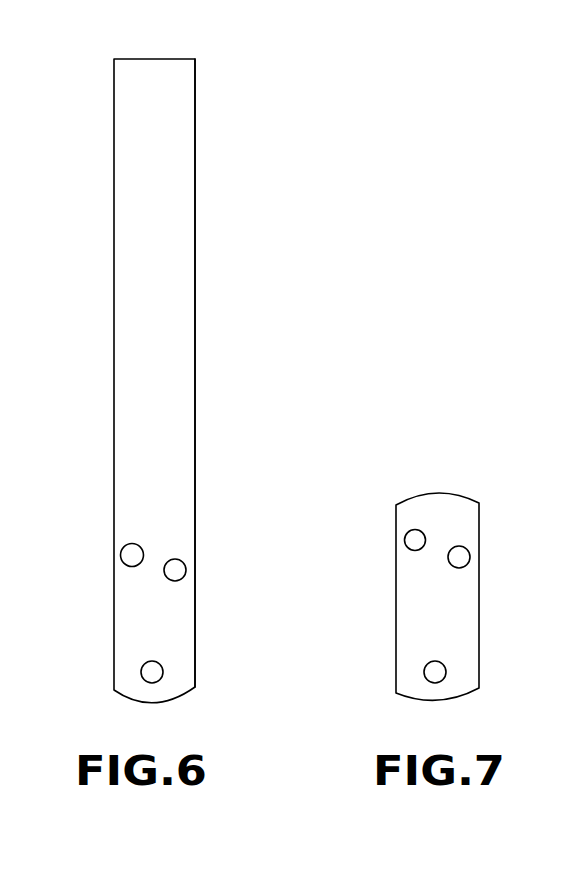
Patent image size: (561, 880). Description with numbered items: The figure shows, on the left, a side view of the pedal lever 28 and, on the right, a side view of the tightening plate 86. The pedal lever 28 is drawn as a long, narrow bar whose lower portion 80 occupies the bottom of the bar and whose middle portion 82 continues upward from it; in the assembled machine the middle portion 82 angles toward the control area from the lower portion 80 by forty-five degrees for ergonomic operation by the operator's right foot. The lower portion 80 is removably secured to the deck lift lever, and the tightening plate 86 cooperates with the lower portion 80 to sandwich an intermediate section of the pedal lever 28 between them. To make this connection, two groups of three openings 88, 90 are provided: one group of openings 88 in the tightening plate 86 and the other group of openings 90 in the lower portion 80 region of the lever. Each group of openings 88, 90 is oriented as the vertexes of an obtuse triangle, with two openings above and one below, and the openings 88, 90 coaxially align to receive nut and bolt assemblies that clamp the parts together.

In FIG. 6, the pedal lever 28 is at (238, 250).
In FIG. 6, the lower portion 80 is at (195, 402).
In FIG. 6, the middle portion 82 is at (195, 145).
In FIG. 6, the openings 90 is at (141, 548).
In FIG. 7, the tightening plate 86 is at (479, 613).
In FIG. 7, the openings 88 is at (423, 531).